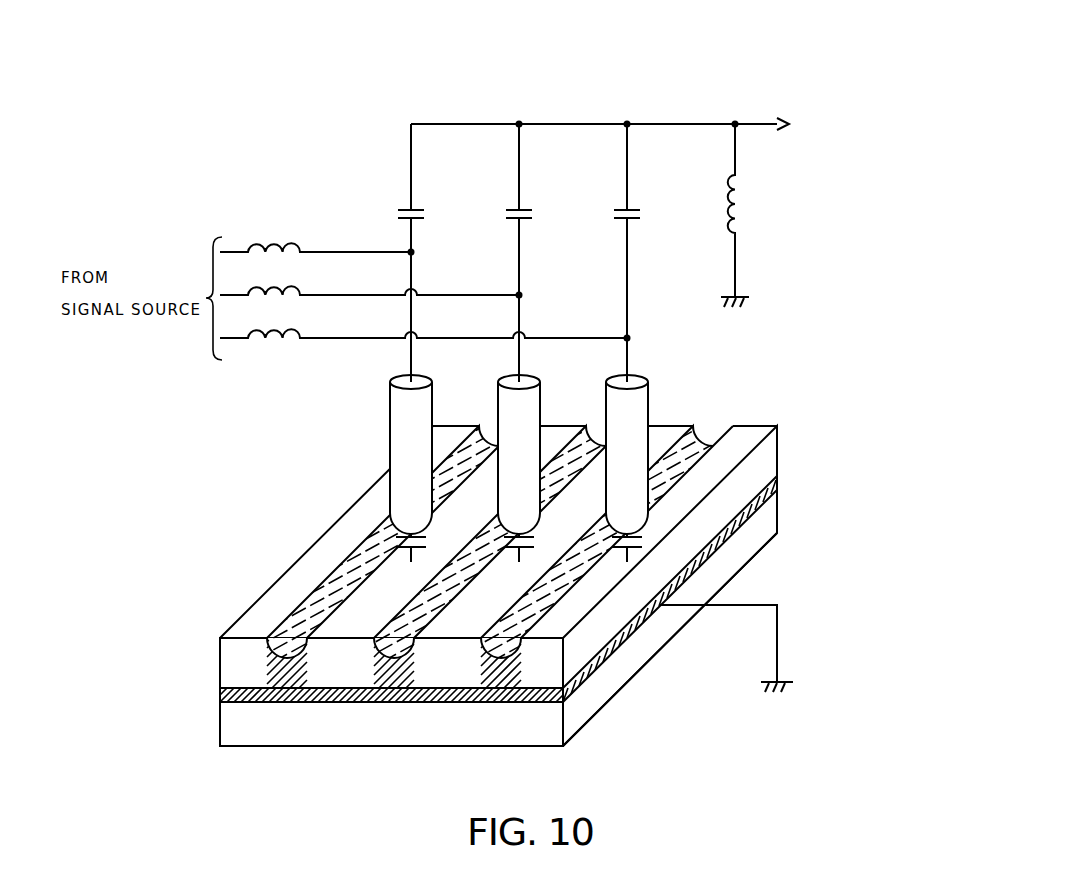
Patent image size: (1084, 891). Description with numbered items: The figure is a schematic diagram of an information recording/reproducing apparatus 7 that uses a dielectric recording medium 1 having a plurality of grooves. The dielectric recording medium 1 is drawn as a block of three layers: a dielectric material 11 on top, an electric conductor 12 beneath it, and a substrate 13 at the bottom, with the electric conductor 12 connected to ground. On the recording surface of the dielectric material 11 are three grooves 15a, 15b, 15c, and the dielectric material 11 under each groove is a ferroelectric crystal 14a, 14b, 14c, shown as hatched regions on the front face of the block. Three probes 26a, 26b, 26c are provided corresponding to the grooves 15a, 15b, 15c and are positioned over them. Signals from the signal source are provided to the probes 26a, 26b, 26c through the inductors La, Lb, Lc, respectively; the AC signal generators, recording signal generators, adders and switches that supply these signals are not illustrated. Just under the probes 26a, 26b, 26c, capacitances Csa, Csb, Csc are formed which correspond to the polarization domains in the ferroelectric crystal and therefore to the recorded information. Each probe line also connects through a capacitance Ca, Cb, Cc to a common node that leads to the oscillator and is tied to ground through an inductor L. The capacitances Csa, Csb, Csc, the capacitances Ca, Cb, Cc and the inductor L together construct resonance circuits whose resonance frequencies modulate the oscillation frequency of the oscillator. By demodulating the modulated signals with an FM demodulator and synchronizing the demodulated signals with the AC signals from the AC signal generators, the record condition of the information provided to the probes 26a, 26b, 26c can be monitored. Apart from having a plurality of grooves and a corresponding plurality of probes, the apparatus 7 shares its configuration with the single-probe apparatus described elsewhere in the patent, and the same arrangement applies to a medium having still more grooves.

The information recording/reproducing apparatus 7 is at (478, 78).
The dielectric recording medium 1 is at (843, 443).
The dielectric material 11 is at (767, 458).
The electric conductor 12 is at (769, 488).
The substrate 13 is at (769, 518).
The ferroelectric crystal 14a is at (288, 675).
The ferroelectric crystal 14b is at (378, 673).
The ferroelectric crystal 14c is at (490, 672).
The groove 15a is at (283, 636).
The groove 15b is at (396, 626).
The groove 15c is at (505, 628).
The probe 26a is at (432, 407).
The probe 26b is at (540, 407).
The probe 26c is at (647, 406).
The capacitance Csa is at (430, 540).
The capacitance Csb is at (538, 540).
The capacitance Csc is at (652, 538).
The capacitance Ca is at (420, 212).
The capacitance Cb is at (531, 210).
The capacitance Cc is at (640, 209).
The inductor L is at (748, 200).
The inductor La is at (288, 241).
The inductor Lb is at (290, 294).
The inductor Lc is at (296, 348).